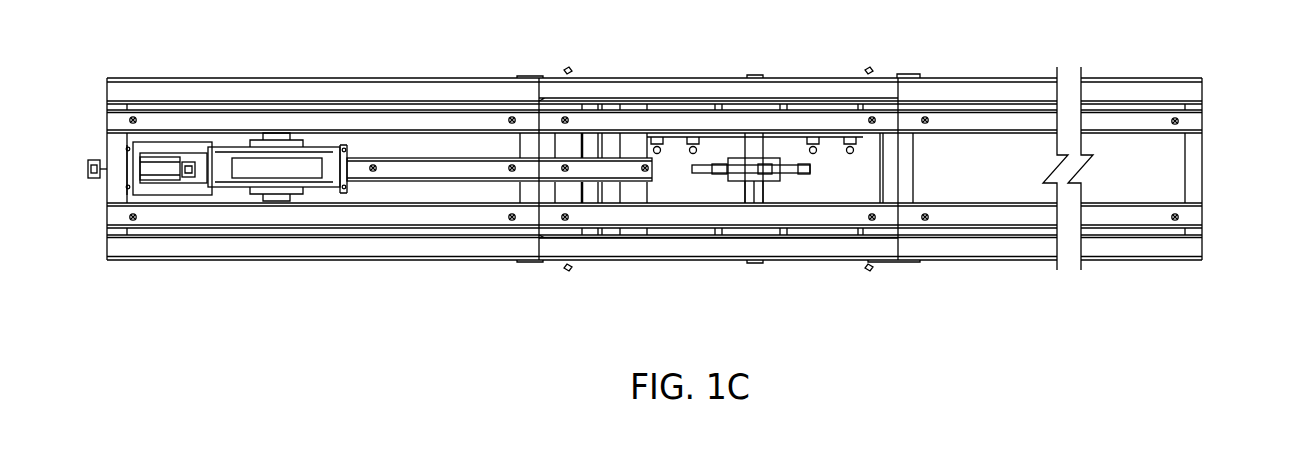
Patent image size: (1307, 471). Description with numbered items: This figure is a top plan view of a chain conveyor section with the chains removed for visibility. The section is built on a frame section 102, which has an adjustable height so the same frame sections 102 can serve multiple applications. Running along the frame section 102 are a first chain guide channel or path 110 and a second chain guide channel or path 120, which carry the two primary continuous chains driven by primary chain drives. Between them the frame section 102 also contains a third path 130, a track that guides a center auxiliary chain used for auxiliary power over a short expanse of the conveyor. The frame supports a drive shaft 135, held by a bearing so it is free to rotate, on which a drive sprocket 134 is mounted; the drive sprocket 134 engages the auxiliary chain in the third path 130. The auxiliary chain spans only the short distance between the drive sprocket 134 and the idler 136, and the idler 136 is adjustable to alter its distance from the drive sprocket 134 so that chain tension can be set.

The frame section 102 is at (1217, 165).
The first chain guide channel or path 110 is at (275, 130).
The second chain guide channel or path 120 is at (605, 217).
The third path 130 is at (440, 168).
The drive sprocket 134 is at (747, 140).
The drive shaft 135 is at (757, 190).
The idler 136 is at (235, 168).